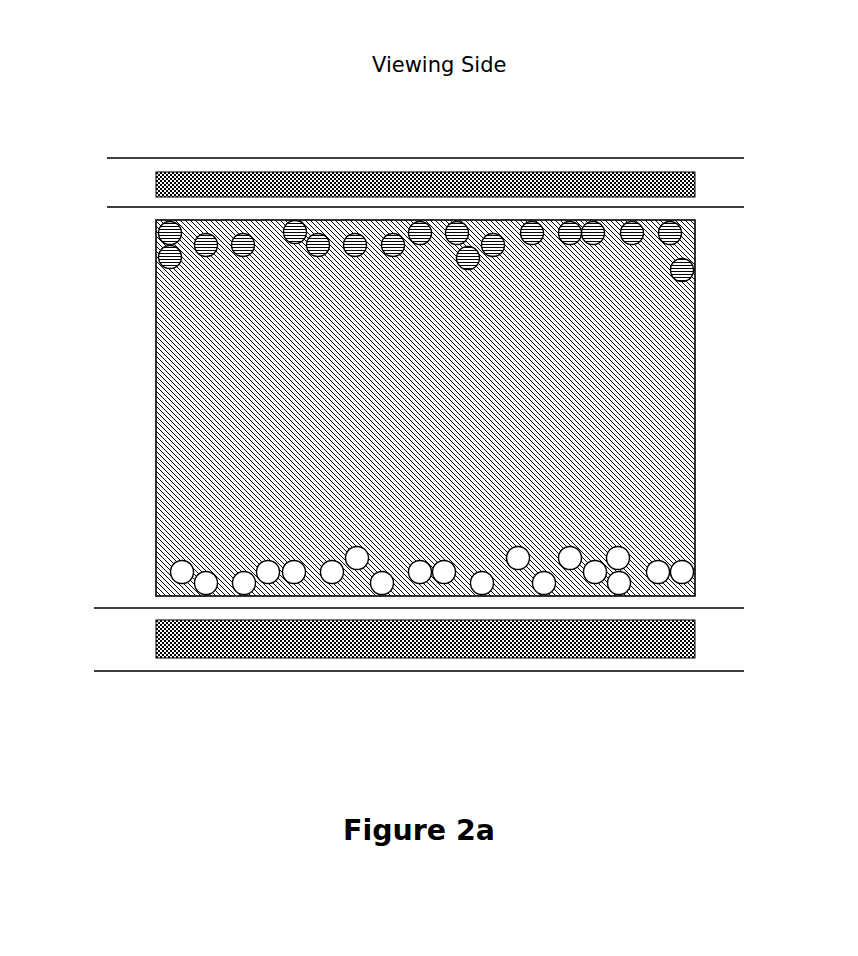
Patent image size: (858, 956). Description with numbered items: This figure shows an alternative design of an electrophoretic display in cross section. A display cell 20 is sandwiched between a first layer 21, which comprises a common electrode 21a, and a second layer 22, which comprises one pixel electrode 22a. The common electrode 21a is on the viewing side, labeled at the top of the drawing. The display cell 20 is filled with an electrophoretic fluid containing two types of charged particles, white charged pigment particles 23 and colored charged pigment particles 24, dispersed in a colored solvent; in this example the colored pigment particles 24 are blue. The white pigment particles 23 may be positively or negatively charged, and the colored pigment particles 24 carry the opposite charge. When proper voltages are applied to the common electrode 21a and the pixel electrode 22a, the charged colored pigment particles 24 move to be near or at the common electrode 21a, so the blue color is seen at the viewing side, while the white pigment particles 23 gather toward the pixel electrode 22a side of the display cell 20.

The display cell 20 is at (703, 409).
The first layer 21 is at (143, 174).
The common electrode 21a is at (206, 174).
The second layer 22 is at (719, 655).
The pixel electrode 22a is at (431, 656).
The white charged pigment particles 23 is at (693, 571).
The colored charged pigment particles 24 is at (593, 222).